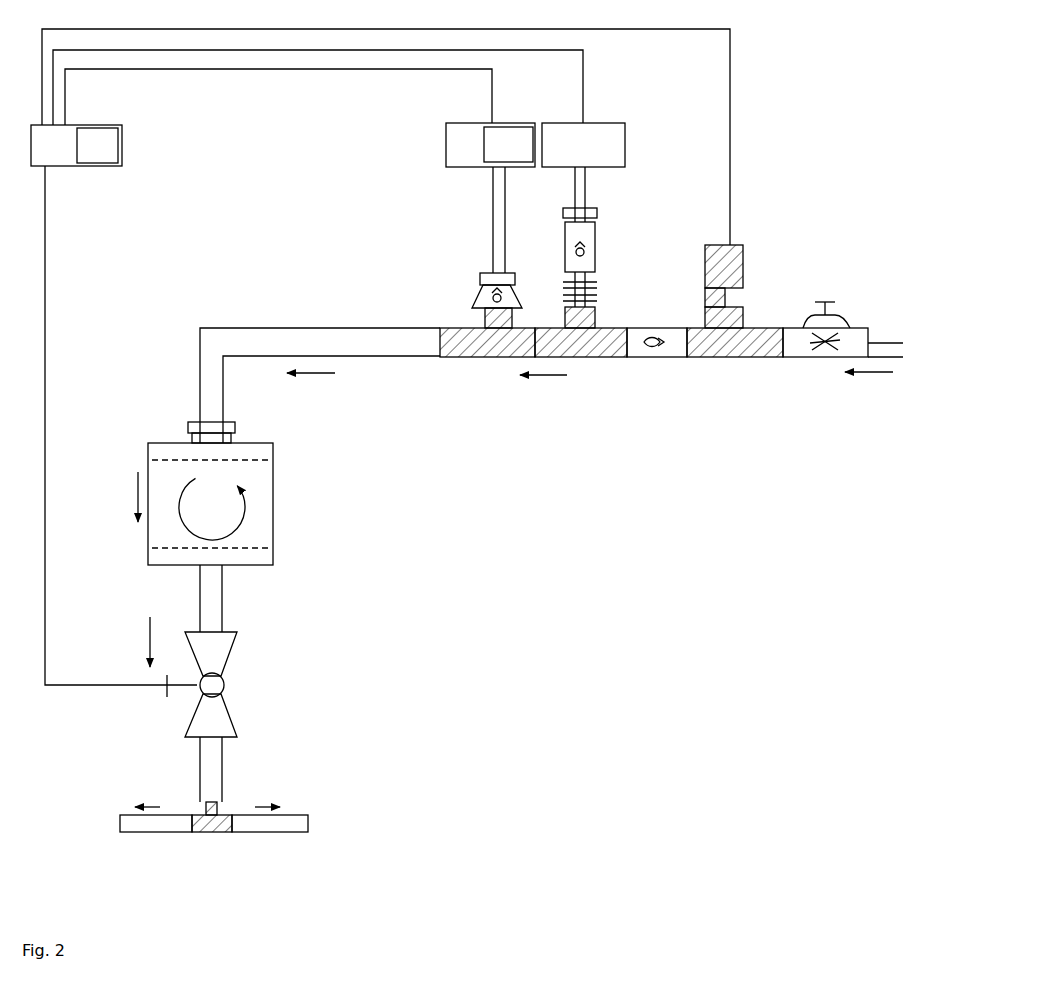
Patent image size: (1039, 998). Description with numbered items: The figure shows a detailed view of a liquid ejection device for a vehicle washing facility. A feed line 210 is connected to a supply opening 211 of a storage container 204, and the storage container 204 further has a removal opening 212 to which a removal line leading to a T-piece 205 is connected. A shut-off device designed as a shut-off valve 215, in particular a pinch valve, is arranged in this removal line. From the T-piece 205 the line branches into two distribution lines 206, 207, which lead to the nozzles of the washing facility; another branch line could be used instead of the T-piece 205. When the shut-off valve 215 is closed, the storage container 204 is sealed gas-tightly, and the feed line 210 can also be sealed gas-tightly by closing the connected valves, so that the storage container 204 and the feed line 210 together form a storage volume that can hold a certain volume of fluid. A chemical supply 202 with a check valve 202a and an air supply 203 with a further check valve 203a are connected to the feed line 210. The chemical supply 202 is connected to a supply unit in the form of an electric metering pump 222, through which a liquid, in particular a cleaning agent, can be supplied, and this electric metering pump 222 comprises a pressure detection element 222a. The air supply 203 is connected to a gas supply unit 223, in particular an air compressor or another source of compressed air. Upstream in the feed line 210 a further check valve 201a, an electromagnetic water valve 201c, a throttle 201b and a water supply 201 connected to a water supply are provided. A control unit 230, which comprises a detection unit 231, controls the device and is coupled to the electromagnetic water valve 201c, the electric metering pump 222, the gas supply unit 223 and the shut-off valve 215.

The water supply 201 is at (940, 305).
The check valve 201a is at (647, 362).
The throttle 201b is at (810, 370).
The electromagnetic water valve 201c is at (752, 258).
The chemical supply 202 is at (483, 223).
The check valve 202a is at (465, 295).
The air supply 203 is at (568, 185).
The check valve 203a is at (560, 266).
The storage container 204 is at (290, 497).
The T-piece 205 is at (213, 843).
The distribution line 206 is at (150, 843).
The distribution line 207 is at (267, 840).
The feed line 210 is at (237, 320).
The supply opening 211 is at (253, 437).
The removal opening 212 is at (234, 577).
The shut-off valve 215 is at (233, 680).
The electric metering pump 222 is at (490, 145).
The pressure detection element 222a is at (508, 144).
The gas supply unit 223 is at (583, 145).
The control unit 230 is at (380, 363).
The detection unit 231 is at (97, 145).